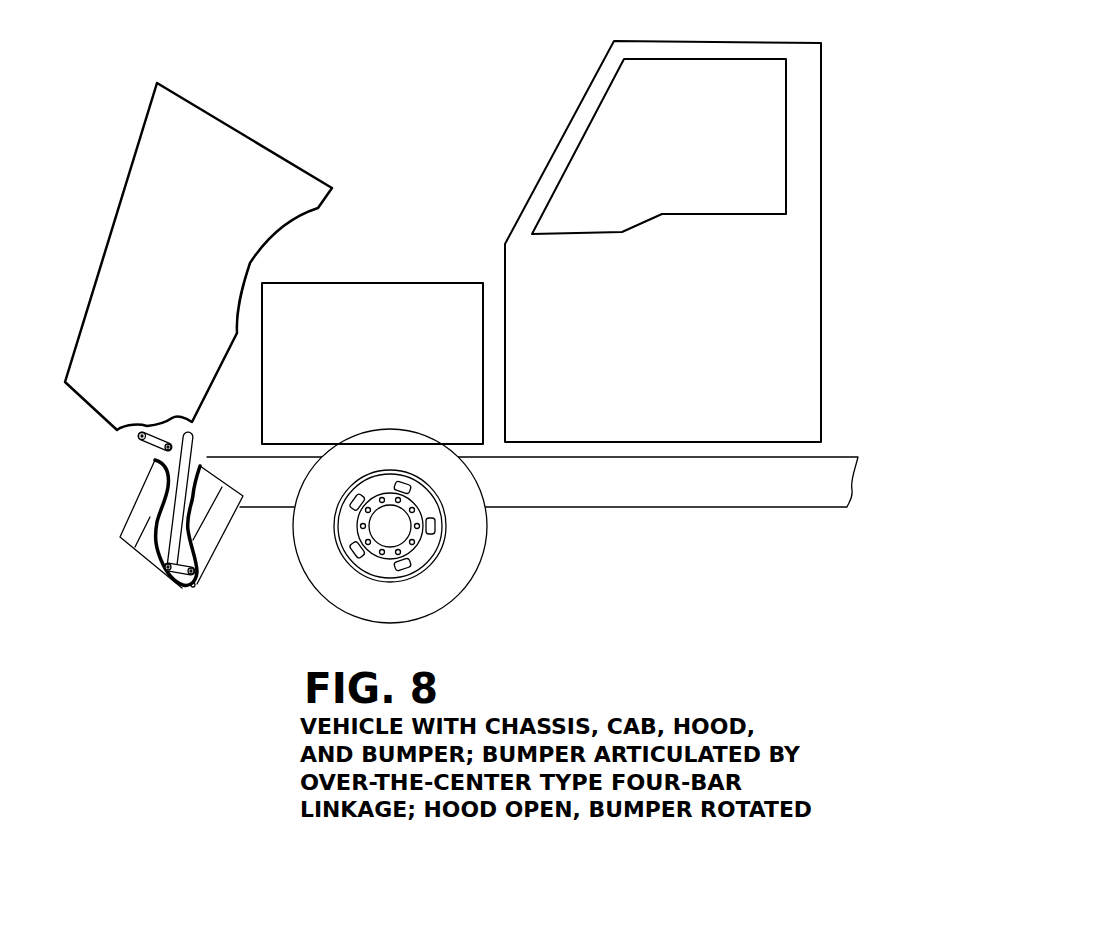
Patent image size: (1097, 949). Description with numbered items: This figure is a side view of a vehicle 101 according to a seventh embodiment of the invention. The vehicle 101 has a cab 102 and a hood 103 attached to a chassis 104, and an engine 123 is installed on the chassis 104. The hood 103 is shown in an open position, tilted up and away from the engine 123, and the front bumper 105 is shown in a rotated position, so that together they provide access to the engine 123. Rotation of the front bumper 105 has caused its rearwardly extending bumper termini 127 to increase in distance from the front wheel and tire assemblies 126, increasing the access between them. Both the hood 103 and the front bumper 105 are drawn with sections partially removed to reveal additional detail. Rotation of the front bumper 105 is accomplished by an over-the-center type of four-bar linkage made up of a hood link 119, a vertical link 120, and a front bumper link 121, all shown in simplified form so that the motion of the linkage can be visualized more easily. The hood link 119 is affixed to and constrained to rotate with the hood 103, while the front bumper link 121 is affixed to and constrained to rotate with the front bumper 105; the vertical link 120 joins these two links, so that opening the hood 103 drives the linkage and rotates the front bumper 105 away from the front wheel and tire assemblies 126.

The vehicle 101 is at (805, 120).
The cab 102 is at (767, 314).
The hood 103 is at (242, 124).
The chassis 104 is at (601, 489).
The front bumper 105 is at (121, 544).
The hood link 119 is at (151, 444).
The vertical link 120 is at (171, 500).
The front bumper link 121 is at (180, 577).
The engine 123 is at (372, 305).
The front wheel and tire assemblies 126 is at (460, 563).
The bumper termini 127 is at (207, 534).